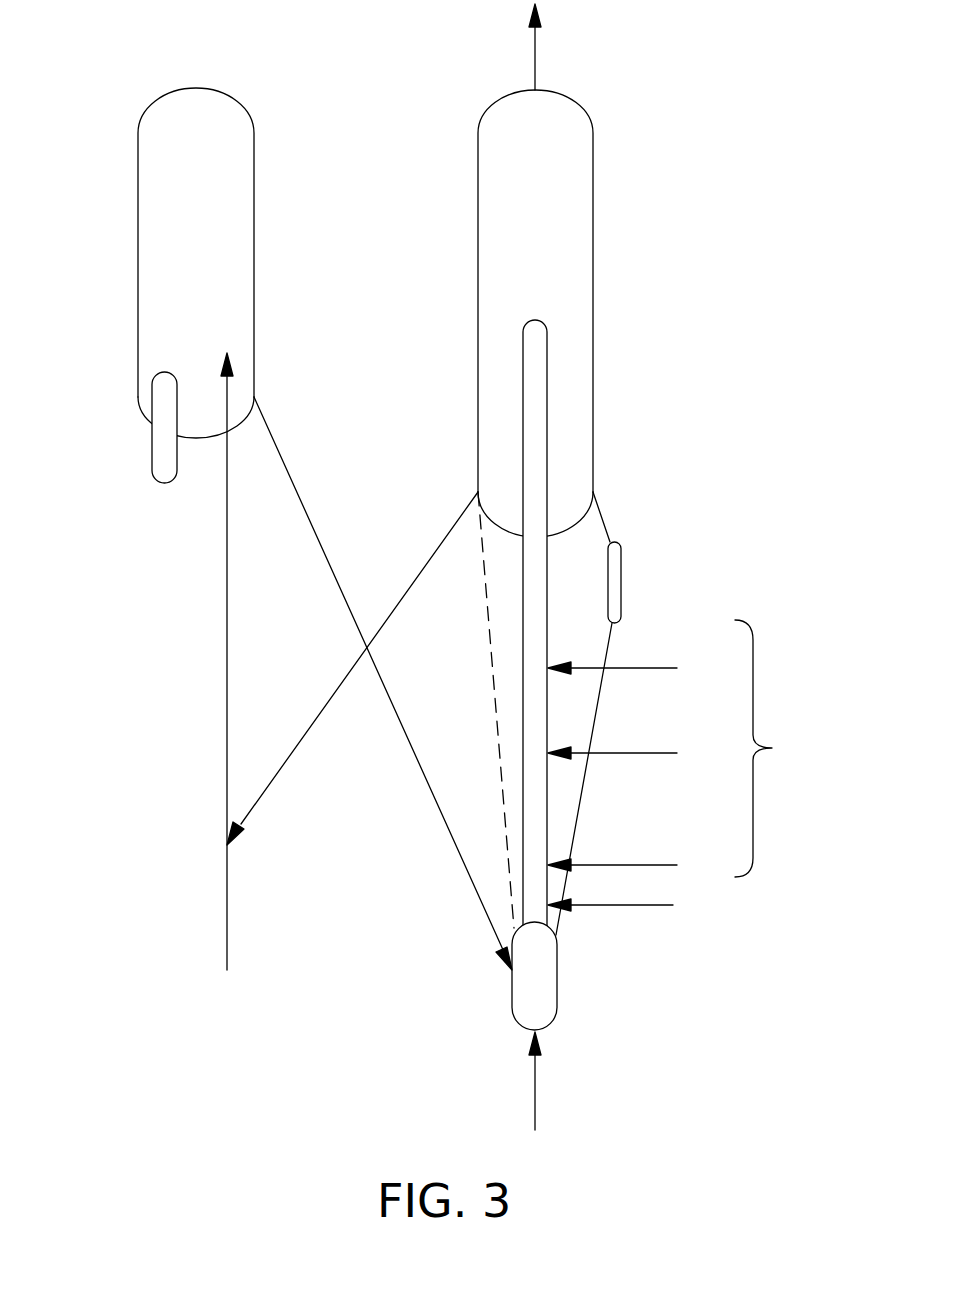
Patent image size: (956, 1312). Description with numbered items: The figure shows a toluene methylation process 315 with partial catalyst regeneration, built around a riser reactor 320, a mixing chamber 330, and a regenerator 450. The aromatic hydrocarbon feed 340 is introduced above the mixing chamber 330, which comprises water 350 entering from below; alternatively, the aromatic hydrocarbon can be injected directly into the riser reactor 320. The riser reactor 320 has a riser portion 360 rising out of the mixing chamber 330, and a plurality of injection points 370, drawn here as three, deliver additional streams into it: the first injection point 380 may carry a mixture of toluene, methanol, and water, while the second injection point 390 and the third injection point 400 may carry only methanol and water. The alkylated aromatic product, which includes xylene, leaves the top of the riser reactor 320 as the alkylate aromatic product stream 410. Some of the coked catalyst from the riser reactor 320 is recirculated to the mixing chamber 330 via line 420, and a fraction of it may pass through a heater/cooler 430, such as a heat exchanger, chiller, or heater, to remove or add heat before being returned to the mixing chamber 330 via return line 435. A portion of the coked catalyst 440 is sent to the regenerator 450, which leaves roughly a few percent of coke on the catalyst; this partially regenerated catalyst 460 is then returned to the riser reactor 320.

The toluene methylation process 315 is at (130, 54).
The riser reactor 320 is at (580, 210).
The mixing chamber 330 is at (559, 1000).
The aromatic hydrocarbon feed 340 is at (644, 906).
The water 350 is at (536, 1088).
The riser portion 360 is at (522, 823).
The injection points 370 is at (779, 748).
The first injection point 380 is at (652, 865).
The second injection point 390 is at (652, 753).
The third injection point 400 is at (652, 668).
The alkylate aromatic product stream 410 is at (536, 47).
The line 420 is at (488, 660).
The heater/cooler 430 is at (622, 583).
The return line 435 is at (606, 657).
The coked catalyst 440 is at (330, 700).
The regenerator 450 is at (245, 205).
The partially regenerated catalyst 460 is at (307, 510).